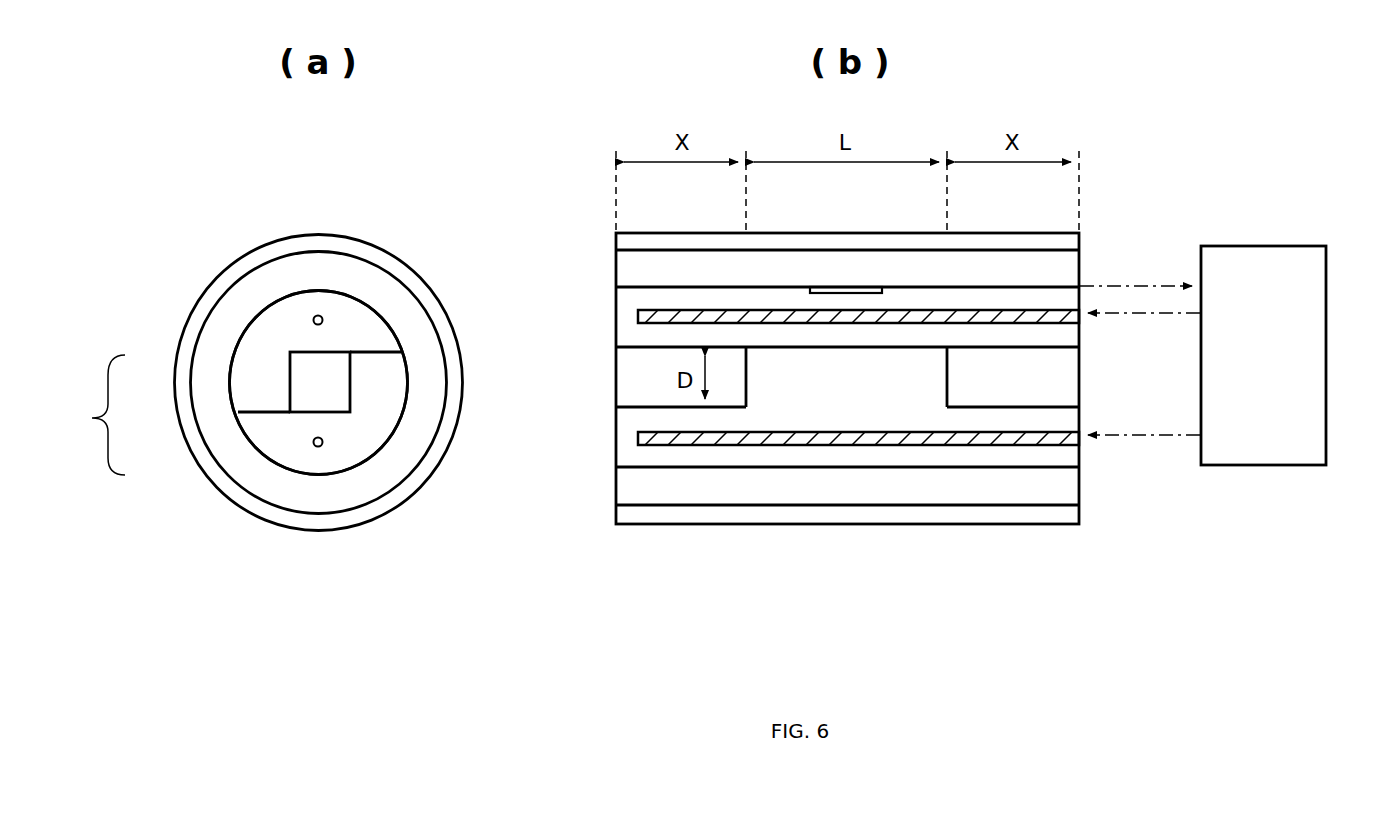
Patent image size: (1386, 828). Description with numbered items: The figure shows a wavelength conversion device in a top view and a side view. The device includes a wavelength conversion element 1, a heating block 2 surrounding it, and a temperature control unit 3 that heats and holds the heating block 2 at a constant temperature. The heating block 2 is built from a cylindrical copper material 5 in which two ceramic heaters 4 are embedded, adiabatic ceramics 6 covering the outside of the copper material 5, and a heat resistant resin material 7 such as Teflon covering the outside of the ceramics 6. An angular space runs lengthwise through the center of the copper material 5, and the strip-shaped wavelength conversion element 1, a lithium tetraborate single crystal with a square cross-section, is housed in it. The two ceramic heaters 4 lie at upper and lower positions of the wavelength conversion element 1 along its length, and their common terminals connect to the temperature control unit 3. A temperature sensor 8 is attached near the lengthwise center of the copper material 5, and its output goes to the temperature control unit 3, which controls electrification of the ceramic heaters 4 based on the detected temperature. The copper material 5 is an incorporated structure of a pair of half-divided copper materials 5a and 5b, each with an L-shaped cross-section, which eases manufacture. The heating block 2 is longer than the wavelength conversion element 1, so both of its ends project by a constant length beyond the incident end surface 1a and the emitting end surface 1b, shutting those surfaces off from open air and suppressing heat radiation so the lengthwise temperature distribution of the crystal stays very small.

The wavelength conversion element 1 is at (335, 378).
The incident end surface 1a is at (743, 373).
The emitting end surface 1b is at (948, 373).
The heating block 2 is at (262, 519).
The temperature control unit 3 is at (1262, 246).
The ceramic heater 4 is at (316, 316).
The copper material 5 is at (630, 316).
The half-divided copper material 5a is at (242, 383).
The half-divided copper material 5b is at (255, 427).
The adiabatic ceramics 6 is at (230, 313).
The heat resistant resin material 7 is at (362, 251).
The temperature sensor 8 is at (840, 287).